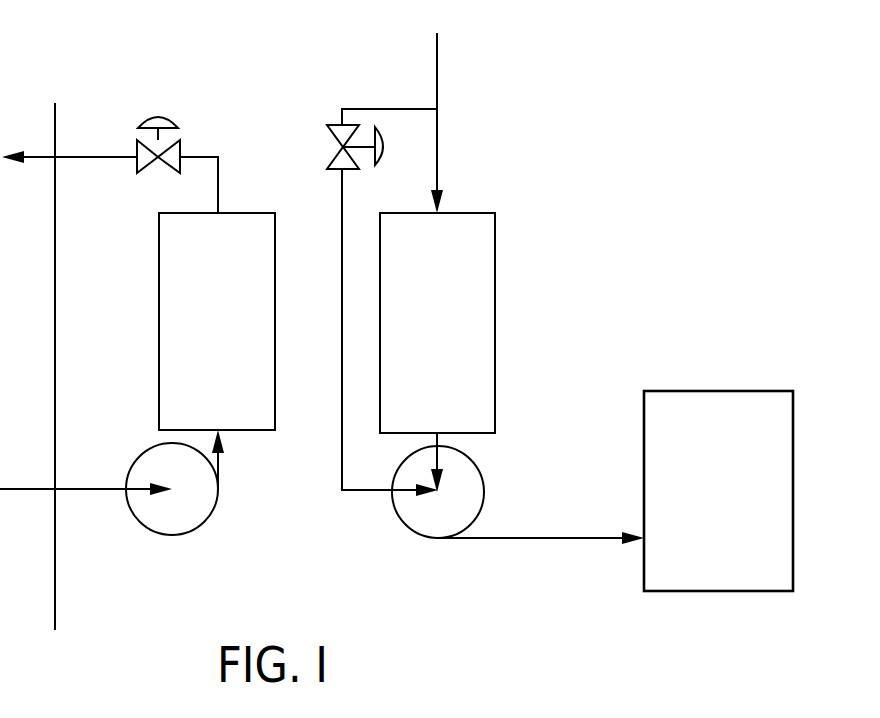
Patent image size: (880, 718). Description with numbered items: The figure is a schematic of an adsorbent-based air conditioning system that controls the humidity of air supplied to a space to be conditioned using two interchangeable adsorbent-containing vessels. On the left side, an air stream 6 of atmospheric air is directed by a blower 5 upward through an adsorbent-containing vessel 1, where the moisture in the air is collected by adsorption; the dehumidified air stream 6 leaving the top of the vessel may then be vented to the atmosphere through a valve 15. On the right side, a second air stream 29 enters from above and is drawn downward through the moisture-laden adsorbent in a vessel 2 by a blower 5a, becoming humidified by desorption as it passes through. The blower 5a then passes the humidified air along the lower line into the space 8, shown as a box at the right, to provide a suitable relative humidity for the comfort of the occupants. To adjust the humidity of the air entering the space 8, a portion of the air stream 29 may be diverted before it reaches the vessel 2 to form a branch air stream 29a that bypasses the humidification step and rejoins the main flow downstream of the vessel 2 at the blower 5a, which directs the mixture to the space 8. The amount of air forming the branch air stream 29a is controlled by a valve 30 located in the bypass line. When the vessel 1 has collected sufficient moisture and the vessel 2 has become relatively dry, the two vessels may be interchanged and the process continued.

The adsorbent-containing vessel 1 is at (217, 321).
The vessel 2 is at (437, 352).
The blower 5 is at (184, 533).
The blower 5a is at (398, 516).
The air stream 6 is at (218, 181).
The space 8 is at (794, 470).
The valve 15 is at (181, 146).
The second air stream 29 is at (438, 71).
The branch air stream 29a is at (341, 432).
The valve 30 is at (333, 125).